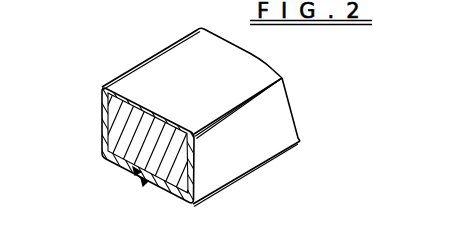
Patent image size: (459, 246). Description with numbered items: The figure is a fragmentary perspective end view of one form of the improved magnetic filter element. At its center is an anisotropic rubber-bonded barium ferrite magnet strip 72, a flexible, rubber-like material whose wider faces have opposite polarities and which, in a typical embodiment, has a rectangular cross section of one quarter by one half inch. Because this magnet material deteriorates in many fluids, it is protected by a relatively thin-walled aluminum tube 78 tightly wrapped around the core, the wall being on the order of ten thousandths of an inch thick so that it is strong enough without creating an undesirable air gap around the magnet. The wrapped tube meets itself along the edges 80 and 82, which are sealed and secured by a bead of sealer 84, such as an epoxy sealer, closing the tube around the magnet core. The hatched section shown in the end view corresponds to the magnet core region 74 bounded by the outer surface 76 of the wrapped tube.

The barium ferrite magnet strip 72 is at (125, 133).
The core body 74 is at (162, 121).
The outer surface 76 is at (115, 165).
The aluminum tube 78 is at (285, 127).
The edge of the tube 80 is at (137, 173).
The edge of the tube 82 is at (147, 188).
The bead of sealer 84 is at (144, 182).